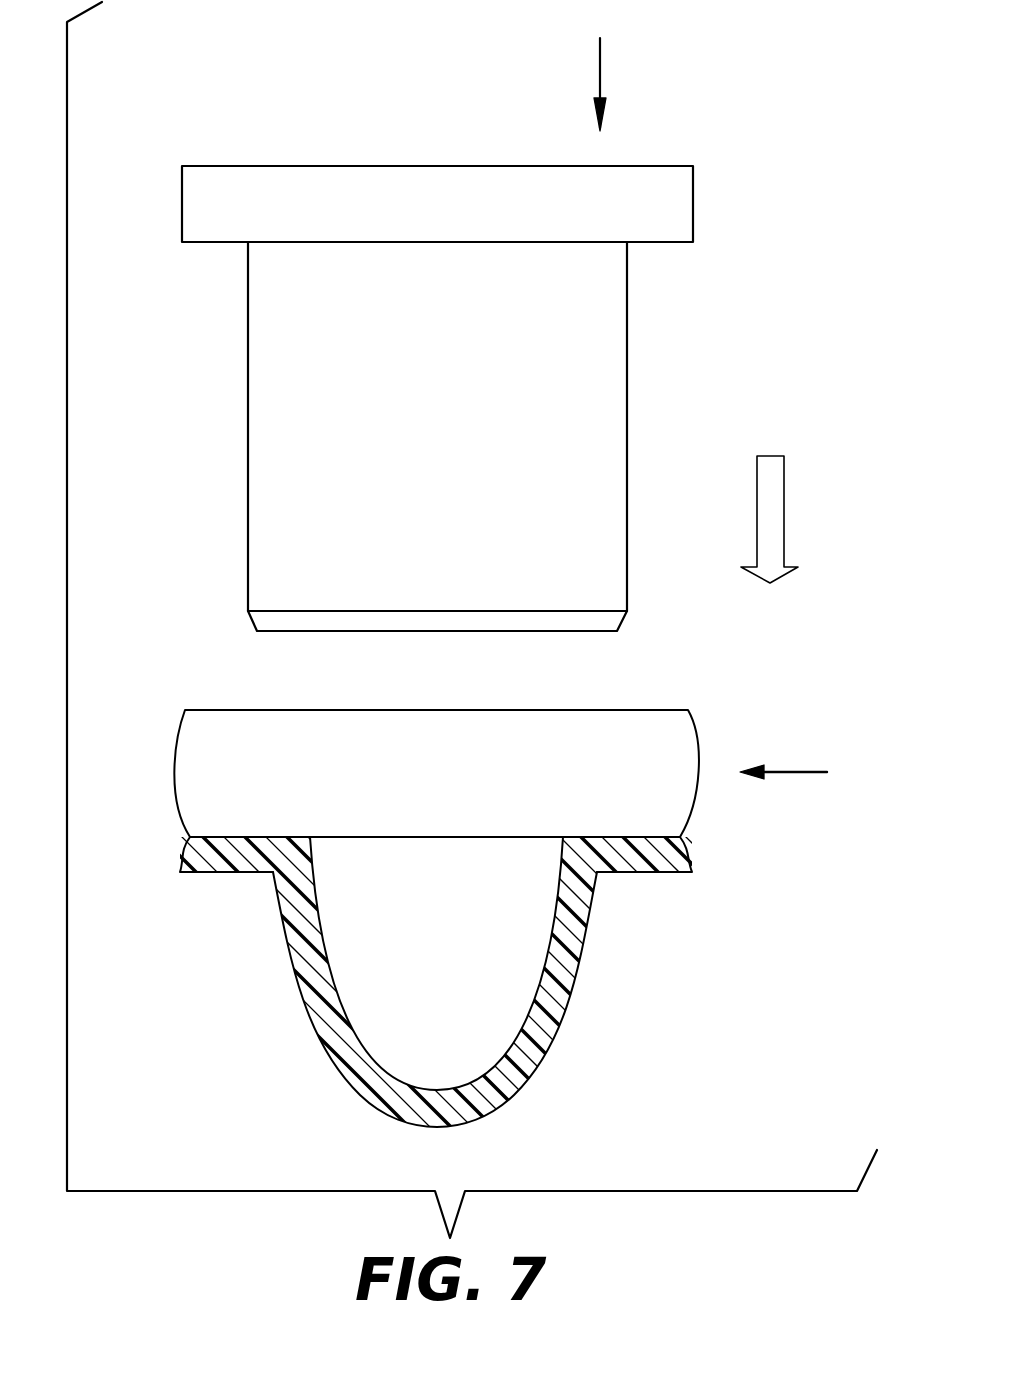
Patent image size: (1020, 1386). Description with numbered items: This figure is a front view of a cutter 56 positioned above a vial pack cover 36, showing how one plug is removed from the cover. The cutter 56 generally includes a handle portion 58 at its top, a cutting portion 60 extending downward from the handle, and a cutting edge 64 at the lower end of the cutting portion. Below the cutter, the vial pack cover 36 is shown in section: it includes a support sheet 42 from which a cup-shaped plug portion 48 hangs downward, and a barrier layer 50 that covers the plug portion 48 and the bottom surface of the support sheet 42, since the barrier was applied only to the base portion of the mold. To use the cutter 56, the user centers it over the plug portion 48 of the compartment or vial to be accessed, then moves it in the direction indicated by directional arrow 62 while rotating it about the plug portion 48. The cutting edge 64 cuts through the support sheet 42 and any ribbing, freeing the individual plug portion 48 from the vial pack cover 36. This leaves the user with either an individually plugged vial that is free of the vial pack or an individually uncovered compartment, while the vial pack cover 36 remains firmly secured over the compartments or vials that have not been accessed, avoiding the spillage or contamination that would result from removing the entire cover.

The vial pack cover 36 is at (806, 773).
The support sheet 42 is at (200, 727).
The plug portion 48 is at (503, 985).
The barrier layer 50 is at (312, 977).
The cutter 56 is at (600, 67).
The handle portion 58 is at (673, 201).
The cutting portion 60 is at (287, 438).
The directional arrow 62 is at (768, 470).
The cutting edge 64 is at (617, 632).